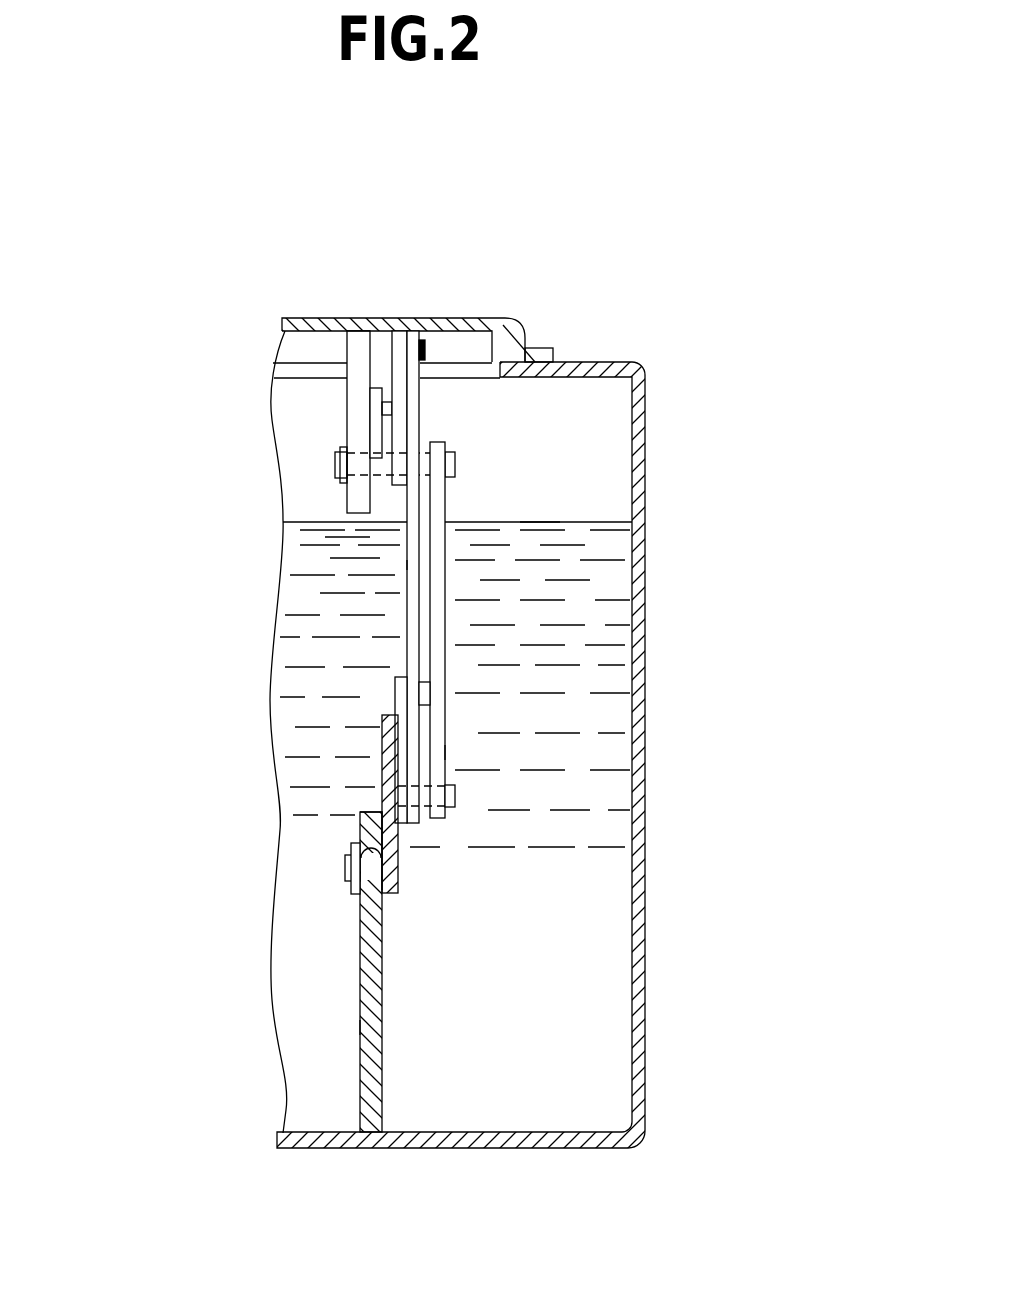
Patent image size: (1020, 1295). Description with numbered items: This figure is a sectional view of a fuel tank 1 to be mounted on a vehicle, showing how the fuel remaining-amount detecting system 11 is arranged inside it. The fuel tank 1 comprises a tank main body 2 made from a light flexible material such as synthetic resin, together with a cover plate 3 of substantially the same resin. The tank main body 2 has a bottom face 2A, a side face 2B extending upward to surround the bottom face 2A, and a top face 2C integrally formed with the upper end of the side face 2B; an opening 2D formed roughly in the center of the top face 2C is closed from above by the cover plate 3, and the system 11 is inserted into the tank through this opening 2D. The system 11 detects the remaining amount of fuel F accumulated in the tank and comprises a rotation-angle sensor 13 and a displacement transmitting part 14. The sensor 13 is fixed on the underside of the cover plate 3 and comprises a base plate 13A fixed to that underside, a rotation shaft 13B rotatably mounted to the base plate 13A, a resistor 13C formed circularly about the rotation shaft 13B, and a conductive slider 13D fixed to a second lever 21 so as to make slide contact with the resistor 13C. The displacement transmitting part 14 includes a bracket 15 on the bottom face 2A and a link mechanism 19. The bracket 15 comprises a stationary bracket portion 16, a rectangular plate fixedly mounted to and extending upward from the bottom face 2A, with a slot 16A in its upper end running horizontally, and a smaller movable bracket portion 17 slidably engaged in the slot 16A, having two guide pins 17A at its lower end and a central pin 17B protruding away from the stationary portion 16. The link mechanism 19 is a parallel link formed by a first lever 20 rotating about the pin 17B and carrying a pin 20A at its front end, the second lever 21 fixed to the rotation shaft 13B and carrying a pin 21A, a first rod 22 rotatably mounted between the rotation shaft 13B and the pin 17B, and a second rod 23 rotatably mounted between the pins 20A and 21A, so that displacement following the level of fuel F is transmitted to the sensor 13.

The fuel tank 1 is at (652, 361).
The tank main body 2 is at (526, 712).
The bottom face 2A is at (483, 1137).
The side face 2B is at (647, 865).
The top face 2C is at (583, 362).
The opening 2D is at (493, 318).
The cover plate 3 is at (303, 327).
The fuel remaining-amount detecting system 11 is at (375, 603).
The rotation-angle sensor 13 is at (357, 358).
The base plate 13A is at (362, 343).
The rotation shaft 13B is at (455, 463).
The resistor 13C is at (397, 427).
The conductive slider 13D is at (376, 410).
The displacement transmitting part 14 is at (251, 968).
The bracket 15 is at (368, 1028).
The stationary bracket portion 16 is at (362, 932).
The slot 16A is at (350, 845).
The movable bracket portion 17 is at (385, 770).
The guide pins 17A is at (345, 866).
The pin 17B is at (455, 795).
The link mechanism 19 is at (460, 752).
The first lever 20 is at (397, 703).
The pin 20A is at (430, 688).
The second lever 21 is at (412, 428).
The pin 21A is at (423, 343).
The first rod 22 is at (437, 605).
The second rod 23 is at (413, 565).
The fuel F is at (535, 525).